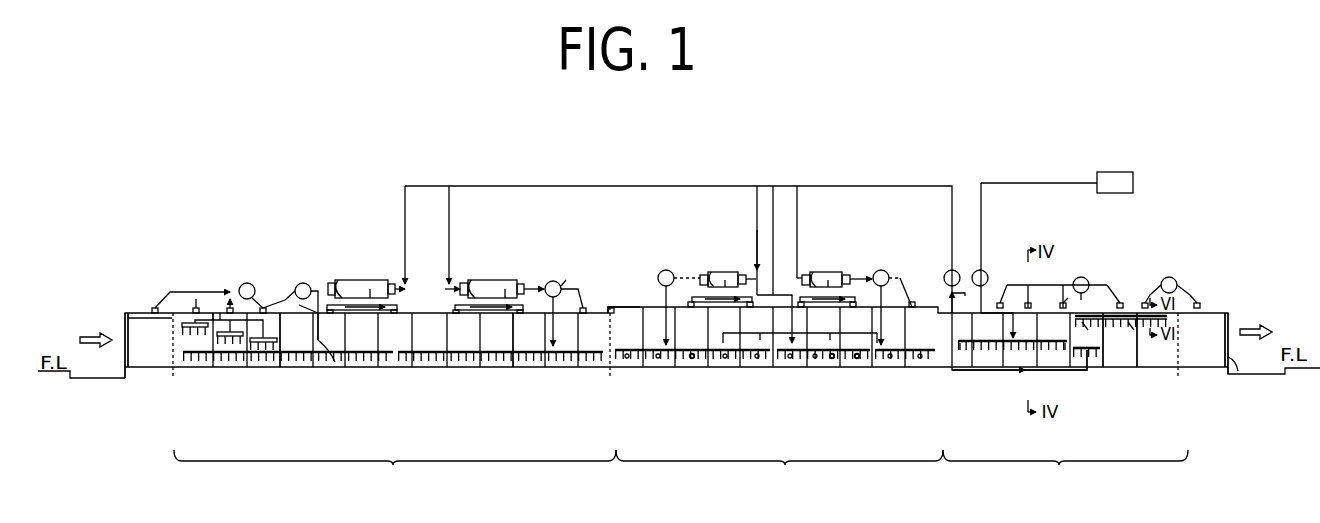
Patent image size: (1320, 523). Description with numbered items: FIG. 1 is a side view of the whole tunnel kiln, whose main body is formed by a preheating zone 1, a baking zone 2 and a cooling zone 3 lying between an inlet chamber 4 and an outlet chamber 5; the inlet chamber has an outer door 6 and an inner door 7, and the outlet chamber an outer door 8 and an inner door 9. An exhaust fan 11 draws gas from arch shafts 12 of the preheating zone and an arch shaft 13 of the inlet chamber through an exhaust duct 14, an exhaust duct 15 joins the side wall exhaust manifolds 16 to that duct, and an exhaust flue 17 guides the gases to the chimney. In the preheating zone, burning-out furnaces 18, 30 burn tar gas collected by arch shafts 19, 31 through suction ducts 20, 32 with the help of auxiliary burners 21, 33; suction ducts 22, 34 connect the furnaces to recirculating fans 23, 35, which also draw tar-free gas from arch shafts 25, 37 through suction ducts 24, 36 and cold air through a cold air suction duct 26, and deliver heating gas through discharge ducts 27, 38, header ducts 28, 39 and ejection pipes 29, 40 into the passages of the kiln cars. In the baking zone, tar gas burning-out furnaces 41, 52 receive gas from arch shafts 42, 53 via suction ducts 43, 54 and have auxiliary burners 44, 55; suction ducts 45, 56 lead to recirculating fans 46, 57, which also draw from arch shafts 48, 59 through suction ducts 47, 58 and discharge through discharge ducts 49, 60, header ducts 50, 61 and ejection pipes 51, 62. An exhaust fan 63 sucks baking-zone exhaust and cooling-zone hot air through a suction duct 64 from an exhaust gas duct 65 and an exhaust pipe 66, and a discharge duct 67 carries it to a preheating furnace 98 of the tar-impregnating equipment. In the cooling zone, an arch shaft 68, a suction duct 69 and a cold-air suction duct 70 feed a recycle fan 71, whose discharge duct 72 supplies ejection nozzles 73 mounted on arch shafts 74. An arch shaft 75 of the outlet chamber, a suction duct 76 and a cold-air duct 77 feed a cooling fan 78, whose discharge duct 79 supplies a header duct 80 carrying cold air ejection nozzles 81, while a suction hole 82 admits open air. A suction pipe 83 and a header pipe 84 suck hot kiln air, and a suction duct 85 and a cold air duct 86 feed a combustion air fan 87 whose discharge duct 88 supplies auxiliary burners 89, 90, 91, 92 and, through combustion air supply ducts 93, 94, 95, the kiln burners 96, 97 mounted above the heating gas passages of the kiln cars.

The preheating zone 1 is at (395, 469).
The baking zone 2 is at (779, 469).
The cooling zone 3 is at (1065, 469).
The inlet chamber 4 is at (157, 340).
The outlet chamber 5 is at (1215, 352).
The outer door 6 is at (126, 376).
The inner door 7 is at (173, 378).
The outer door 8 is at (1230, 368).
The inner door 9 is at (1236, 370).
The exhaust fan 11 is at (244, 283).
The arch shafts 12 is at (196, 299).
The arch shaft 13 is at (154, 308).
The exhaust duct 14 is at (168, 292).
The exhaust duct 15 is at (213, 313).
The exhaust manifolds 16 is at (232, 340).
The exhaust flue 17 is at (253, 285).
The burning-out furnace 18 is at (382, 285).
The arch shaft 19 is at (330, 305).
The suction duct 20 is at (364, 286).
The auxiliary burner 21 is at (410, 289).
The suction duct 22 is at (320, 305).
The recirculating fan 23 is at (305, 283).
The suction duct 24 is at (286, 300).
The arch shaft 25 is at (263, 308).
The cold air suction duct 26 is at (299, 305).
The discharge duct 27 is at (318, 342).
The header duct 28 is at (296, 358).
The ejection pipes 29 is at (203, 360).
The burning-out furnace 30 is at (496, 285).
The arch shaft 31 is at (521, 284).
The suction duct 32 is at (464, 283).
The auxiliary burner 33 is at (450, 288).
The suction duct 34 is at (551, 281).
The recirculating fan 35 is at (562, 281).
The suction duct 36 is at (578, 289).
The arch shaft 37 is at (586, 308).
The discharge duct 38 is at (553, 350).
The header duct 39 is at (524, 356).
The ejection pipes 40 is at (425, 360).
The tar gas burning-out furnace 41 is at (742, 275).
The arch shaft 42 is at (755, 235).
The suction duct 43 is at (720, 278).
The auxiliary burner 44 is at (752, 292).
The suction duct 45 is at (704, 275).
The recirculating fan 46 is at (665, 270).
The suction duct 47 is at (613, 308).
The arch shaft 48 is at (607, 306).
The discharge duct 49 is at (665, 348).
The header duct 50 is at (725, 358).
The ejection pipes 51 is at (611, 358).
The tar gas burning-out furnace 52 is at (820, 272).
The arch shaft 53 is at (801, 302).
The suction duct 54 is at (836, 278).
The auxiliary burner 55 is at (797, 272).
The suction duct 56 is at (865, 278).
The recirculating fan 57 is at (886, 271).
The suction duct 58 is at (901, 278).
The arch shaft 59 is at (913, 302).
The discharge duct 60 is at (882, 335).
The header duct 61 is at (835, 359).
The ejection pipes 62 is at (820, 358).
The exhaust fan 63 is at (984, 271).
The suction duct 64 is at (1013, 332).
The exhaust gas duct 65 is at (990, 345).
The exhaust pipe 66 is at (961, 350).
The discharge duct 67 is at (1033, 183).
The arch shaft 68 is at (1121, 303).
The suction duct 69 is at (1108, 284).
The suction duct 70 is at (1089, 283).
The recycle fan 71 is at (1081, 277).
The discharge duct 72 is at (1040, 285).
The ejection nozzles 73 is at (1001, 303).
The arch shafts 74 is at (1004, 300).
The arch shaft 75 is at (1200, 306).
The suction duct 76 is at (1198, 300).
The duct 77 is at (1190, 294).
The cooling fan 78 is at (1167, 277).
The discharge duct 79 is at (1140, 313).
The header duct 80 is at (1132, 322).
The cold air ejection nozzles 81 is at (1088, 322).
The suction hole 82 is at (1140, 337).
The suction pipe 83 is at (1086, 353).
The header pipe 84 is at (1092, 355).
The suction duct 85 is at (1043, 371).
The cold air duct 86 is at (965, 293).
The air fan for combustion 87 is at (949, 271).
The discharge duct 88 is at (612, 186).
The auxiliary burner 89 is at (407, 195).
The auxiliary burner 90 is at (451, 195).
The auxiliary burner 91 is at (755, 190).
The auxiliary burner 92 is at (797, 190).
The combustion air supply duct 93 is at (773, 190).
The combustion air supply duct 94 is at (788, 343).
The combustion air supply duct 95 is at (762, 338).
The kiln burners 96 is at (724, 338).
The kiln burners 97 is at (692, 359).
The preheating furnace 98 is at (1097, 180).